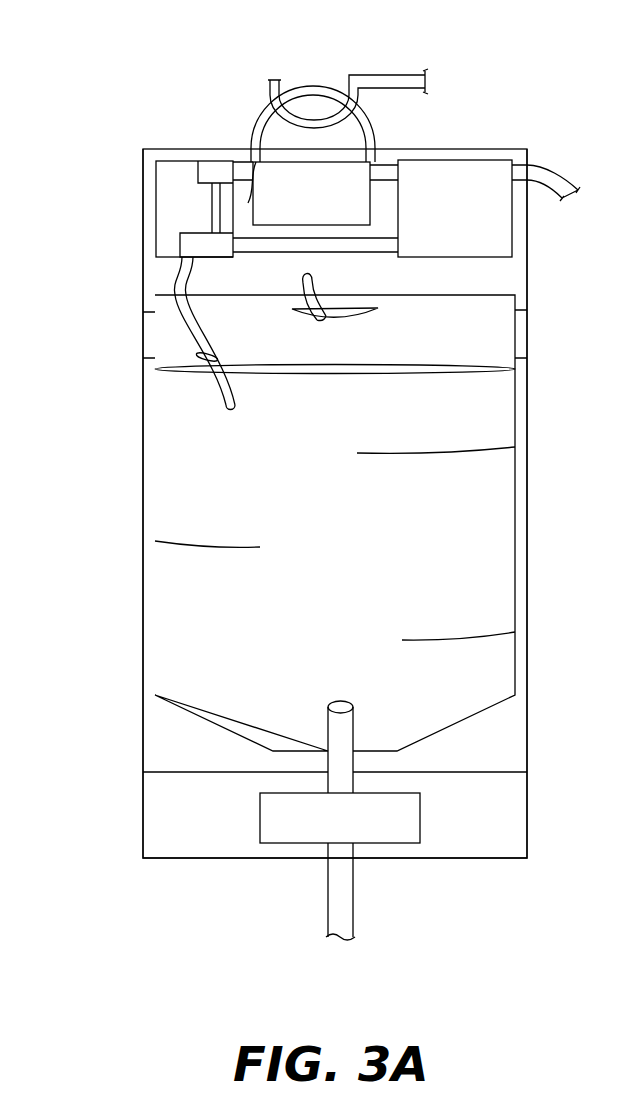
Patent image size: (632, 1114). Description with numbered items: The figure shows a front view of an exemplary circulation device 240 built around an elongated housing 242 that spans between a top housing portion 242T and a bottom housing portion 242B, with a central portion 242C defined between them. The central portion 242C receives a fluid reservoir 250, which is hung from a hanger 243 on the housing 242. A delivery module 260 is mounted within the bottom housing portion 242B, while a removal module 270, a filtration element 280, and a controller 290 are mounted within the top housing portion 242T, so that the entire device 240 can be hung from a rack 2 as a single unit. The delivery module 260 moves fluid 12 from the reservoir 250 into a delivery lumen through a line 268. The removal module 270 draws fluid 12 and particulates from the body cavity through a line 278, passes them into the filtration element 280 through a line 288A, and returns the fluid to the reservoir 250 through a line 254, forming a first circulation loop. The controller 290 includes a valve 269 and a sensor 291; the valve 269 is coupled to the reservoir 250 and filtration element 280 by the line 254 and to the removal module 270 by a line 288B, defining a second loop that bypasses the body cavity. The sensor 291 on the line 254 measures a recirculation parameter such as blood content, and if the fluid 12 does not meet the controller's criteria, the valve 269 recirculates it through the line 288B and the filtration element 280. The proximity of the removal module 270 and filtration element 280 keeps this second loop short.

The circulation device 240 is at (110, 37).
The rack 2 is at (390, 73).
The fluid 12 is at (177, 608).
The housing 242 is at (142, 710).
The top housing portion 242T is at (148, 218).
The central portion 242C is at (147, 553).
The bottom housing portion 242B is at (175, 822).
The hanger 243 is at (313, 278).
The fluid reservoir 250 is at (173, 478).
The line 254 is at (246, 165).
The delivery module 260 is at (283, 822).
The line 268 is at (345, 898).
The valve 269 is at (182, 243).
The removal module 270 is at (452, 182).
The line 278 is at (540, 167).
The filtration element 280 is at (250, 166).
The line 288A is at (383, 168).
The line 288B is at (288, 262).
The controller 290 is at (170, 197).
The sensor 291 is at (207, 172).